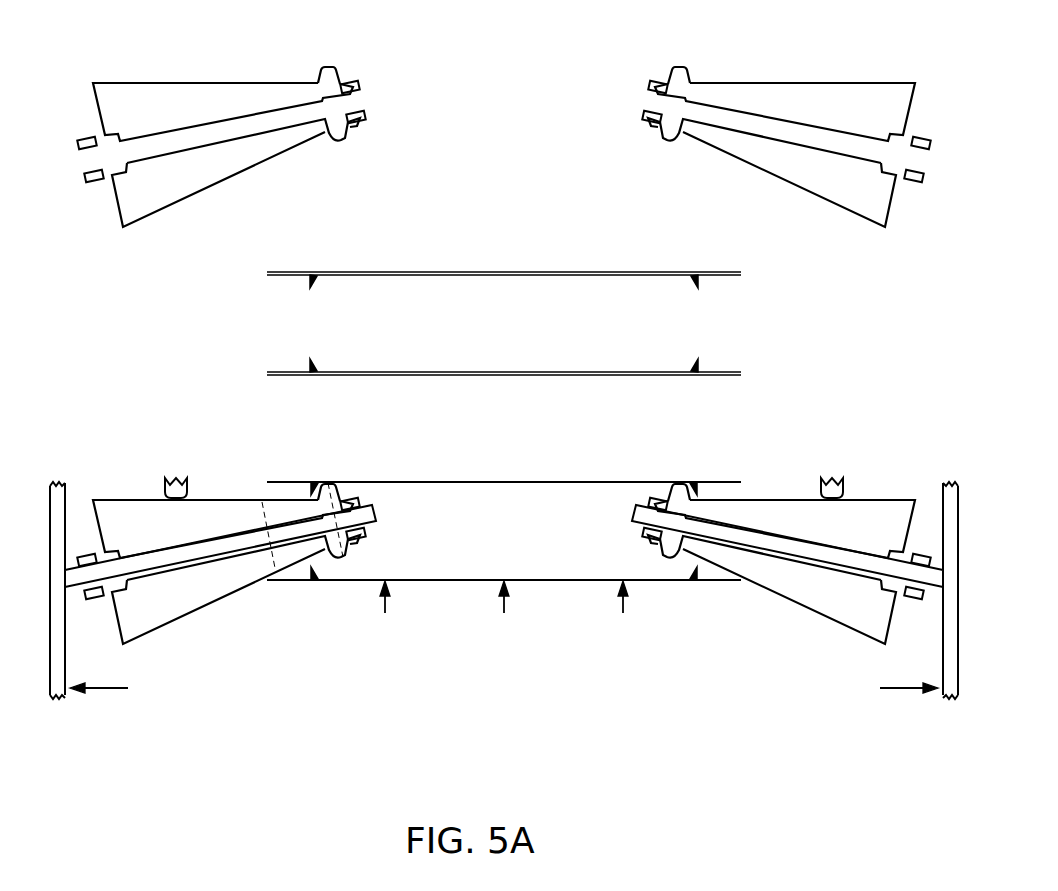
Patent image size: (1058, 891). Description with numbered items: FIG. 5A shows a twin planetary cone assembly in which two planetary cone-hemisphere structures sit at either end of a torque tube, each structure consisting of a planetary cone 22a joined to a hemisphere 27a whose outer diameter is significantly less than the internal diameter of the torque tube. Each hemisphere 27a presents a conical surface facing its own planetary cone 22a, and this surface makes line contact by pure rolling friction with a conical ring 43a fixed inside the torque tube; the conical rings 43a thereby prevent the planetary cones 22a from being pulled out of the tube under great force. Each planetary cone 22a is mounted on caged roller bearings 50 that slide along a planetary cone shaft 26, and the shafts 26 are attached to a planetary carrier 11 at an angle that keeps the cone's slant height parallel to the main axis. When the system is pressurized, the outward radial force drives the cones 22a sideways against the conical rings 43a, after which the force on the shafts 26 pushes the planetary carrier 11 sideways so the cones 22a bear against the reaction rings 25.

The planetary carrier 11 is at (57, 505).
The planetary cone 22a is at (188, 183).
The reaction ring 25 is at (165, 484).
The planetary cone shaft 26 is at (378, 511).
The hemisphere 27a is at (332, 66).
The conical ring 43a is at (319, 364).
The caged roller bearing 50 is at (80, 137).